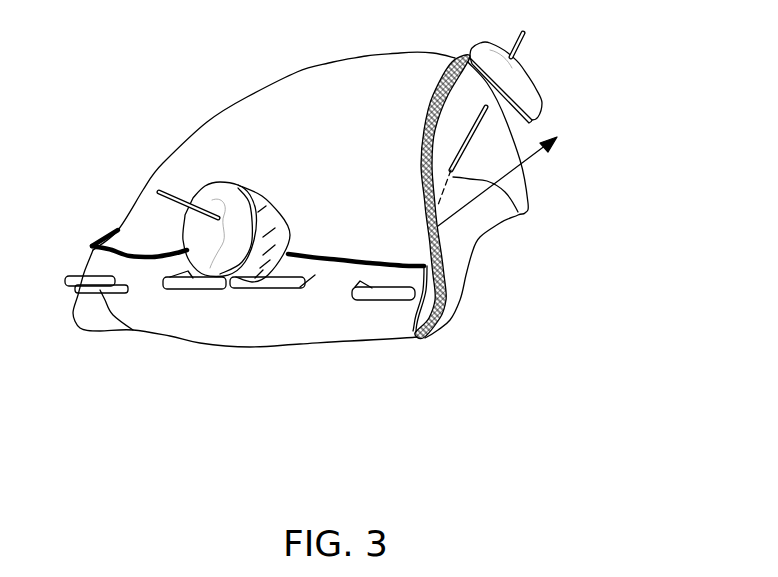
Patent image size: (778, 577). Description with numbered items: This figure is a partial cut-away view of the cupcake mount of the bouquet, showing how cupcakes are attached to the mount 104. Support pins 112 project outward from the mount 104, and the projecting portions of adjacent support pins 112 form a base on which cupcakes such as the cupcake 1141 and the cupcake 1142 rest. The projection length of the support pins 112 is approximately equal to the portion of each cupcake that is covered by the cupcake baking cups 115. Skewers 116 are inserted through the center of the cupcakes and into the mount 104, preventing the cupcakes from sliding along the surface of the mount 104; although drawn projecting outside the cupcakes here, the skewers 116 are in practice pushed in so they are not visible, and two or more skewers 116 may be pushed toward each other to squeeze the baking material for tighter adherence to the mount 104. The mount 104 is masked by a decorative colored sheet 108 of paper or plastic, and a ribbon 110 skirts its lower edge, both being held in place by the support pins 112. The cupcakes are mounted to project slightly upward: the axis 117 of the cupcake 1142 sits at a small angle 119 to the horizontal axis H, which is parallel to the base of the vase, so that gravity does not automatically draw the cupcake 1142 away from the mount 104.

The mount 104 is at (444, 303).
The decorative colored sheet 108 is at (422, 340).
The ribbon 110 is at (406, 340).
The support pins 112 is at (352, 300).
The cupcake 1141 is at (230, 181).
The cupcake 1142 is at (537, 105).
The cupcake baking cups 115 is at (262, 213).
The skewers 116 is at (162, 190).
The axis 117 is at (445, 172).
The angle 119 is at (518, 212).
The horizontal axis H is at (548, 145).